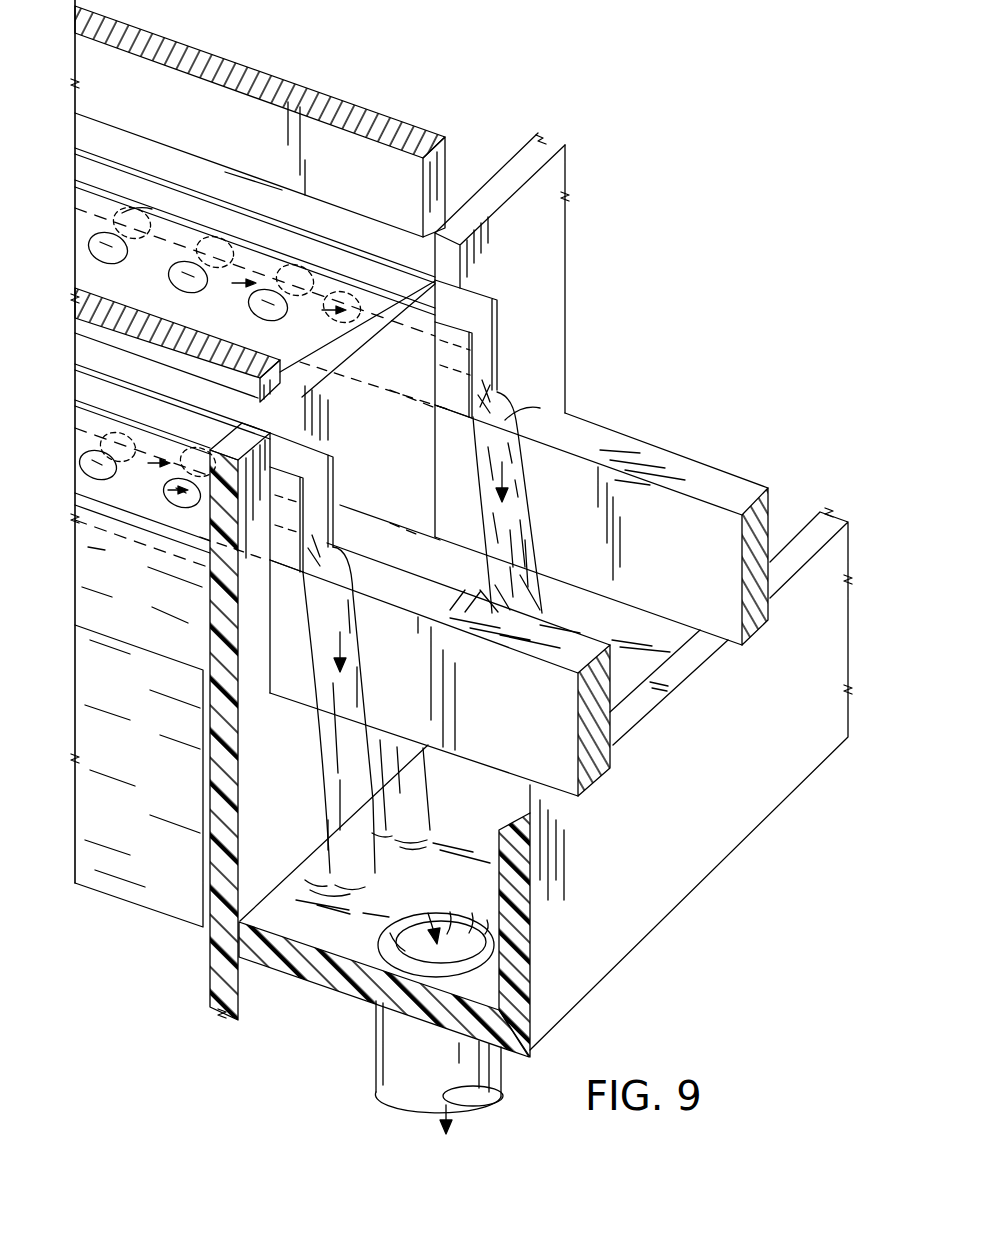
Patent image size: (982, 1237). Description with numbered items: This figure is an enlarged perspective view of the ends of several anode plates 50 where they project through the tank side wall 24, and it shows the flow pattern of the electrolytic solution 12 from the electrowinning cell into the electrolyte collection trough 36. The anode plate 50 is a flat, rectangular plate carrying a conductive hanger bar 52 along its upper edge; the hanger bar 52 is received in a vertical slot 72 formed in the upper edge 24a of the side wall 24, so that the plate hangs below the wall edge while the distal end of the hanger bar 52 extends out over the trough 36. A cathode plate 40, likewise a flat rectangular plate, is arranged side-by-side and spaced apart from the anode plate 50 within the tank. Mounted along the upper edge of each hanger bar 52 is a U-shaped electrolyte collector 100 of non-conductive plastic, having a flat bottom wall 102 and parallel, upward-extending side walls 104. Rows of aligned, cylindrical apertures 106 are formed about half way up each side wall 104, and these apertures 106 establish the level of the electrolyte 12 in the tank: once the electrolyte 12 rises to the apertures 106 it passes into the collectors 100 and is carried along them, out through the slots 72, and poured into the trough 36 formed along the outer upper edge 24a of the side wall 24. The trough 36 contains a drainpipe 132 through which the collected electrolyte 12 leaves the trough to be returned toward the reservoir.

The electrolytic solution 12 is at (355, 222).
The side wall 24 is at (268, 984).
The upper edge of side wall 24a is at (513, 173).
The trough 36 is at (483, 882).
The cathode plate 40 is at (287, 85).
The anode plate 50 is at (138, 897).
The hanger bar 52 is at (717, 480).
The vertical slot 72 is at (450, 258).
The electrolyte collector 100 is at (504, 300).
The bottom wall 102 is at (485, 405).
The side wall of collector 104 is at (497, 340).
The aperture 106 is at (187, 263).
The drainpipe 132 is at (400, 1063).